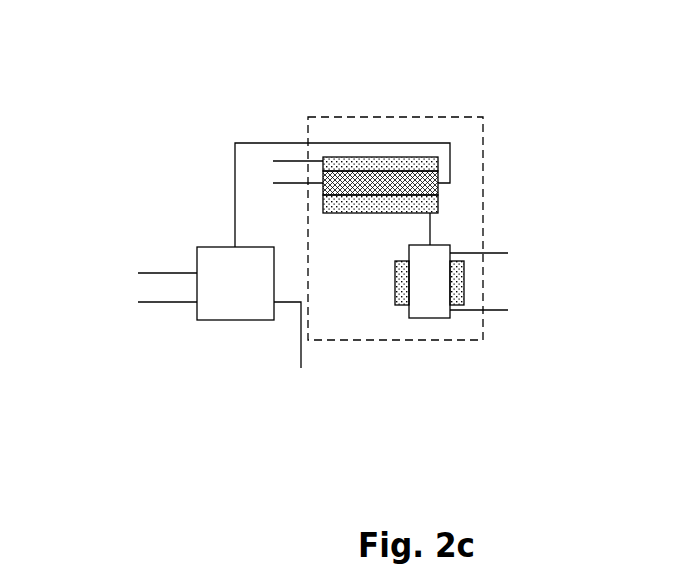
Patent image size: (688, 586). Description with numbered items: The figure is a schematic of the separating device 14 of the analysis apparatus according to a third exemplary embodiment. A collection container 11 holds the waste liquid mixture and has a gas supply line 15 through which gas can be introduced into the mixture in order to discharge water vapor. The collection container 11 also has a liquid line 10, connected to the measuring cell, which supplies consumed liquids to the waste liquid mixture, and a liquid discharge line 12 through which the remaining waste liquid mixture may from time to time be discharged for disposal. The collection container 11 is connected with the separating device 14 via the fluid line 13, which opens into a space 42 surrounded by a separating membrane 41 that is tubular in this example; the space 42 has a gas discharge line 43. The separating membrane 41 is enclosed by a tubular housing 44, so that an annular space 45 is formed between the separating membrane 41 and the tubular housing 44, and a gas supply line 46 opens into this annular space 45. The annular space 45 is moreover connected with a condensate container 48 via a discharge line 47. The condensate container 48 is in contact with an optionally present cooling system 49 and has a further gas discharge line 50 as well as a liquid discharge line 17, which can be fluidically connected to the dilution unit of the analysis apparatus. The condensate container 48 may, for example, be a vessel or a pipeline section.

The liquid line 10 is at (148, 273).
The collection container 11 is at (225, 303).
The liquid discharge line 12 is at (301, 360).
The fluid line 13 is at (235, 210).
The separating device 14 is at (308, 135).
The gas supply line 15 is at (165, 302).
The liquid discharge line 17 is at (500, 312).
The separating membrane 41 is at (352, 163).
The space 42 is at (370, 182).
The gas discharge line 43 is at (290, 186).
The tubular housing 44 is at (430, 155).
The annular space 45 is at (400, 163).
The gas supply line 46 is at (290, 161).
The discharge line 47 is at (432, 230).
The condensate container 48 is at (428, 300).
The cooling system 49 is at (402, 305).
The gas discharge line 50 is at (493, 256).